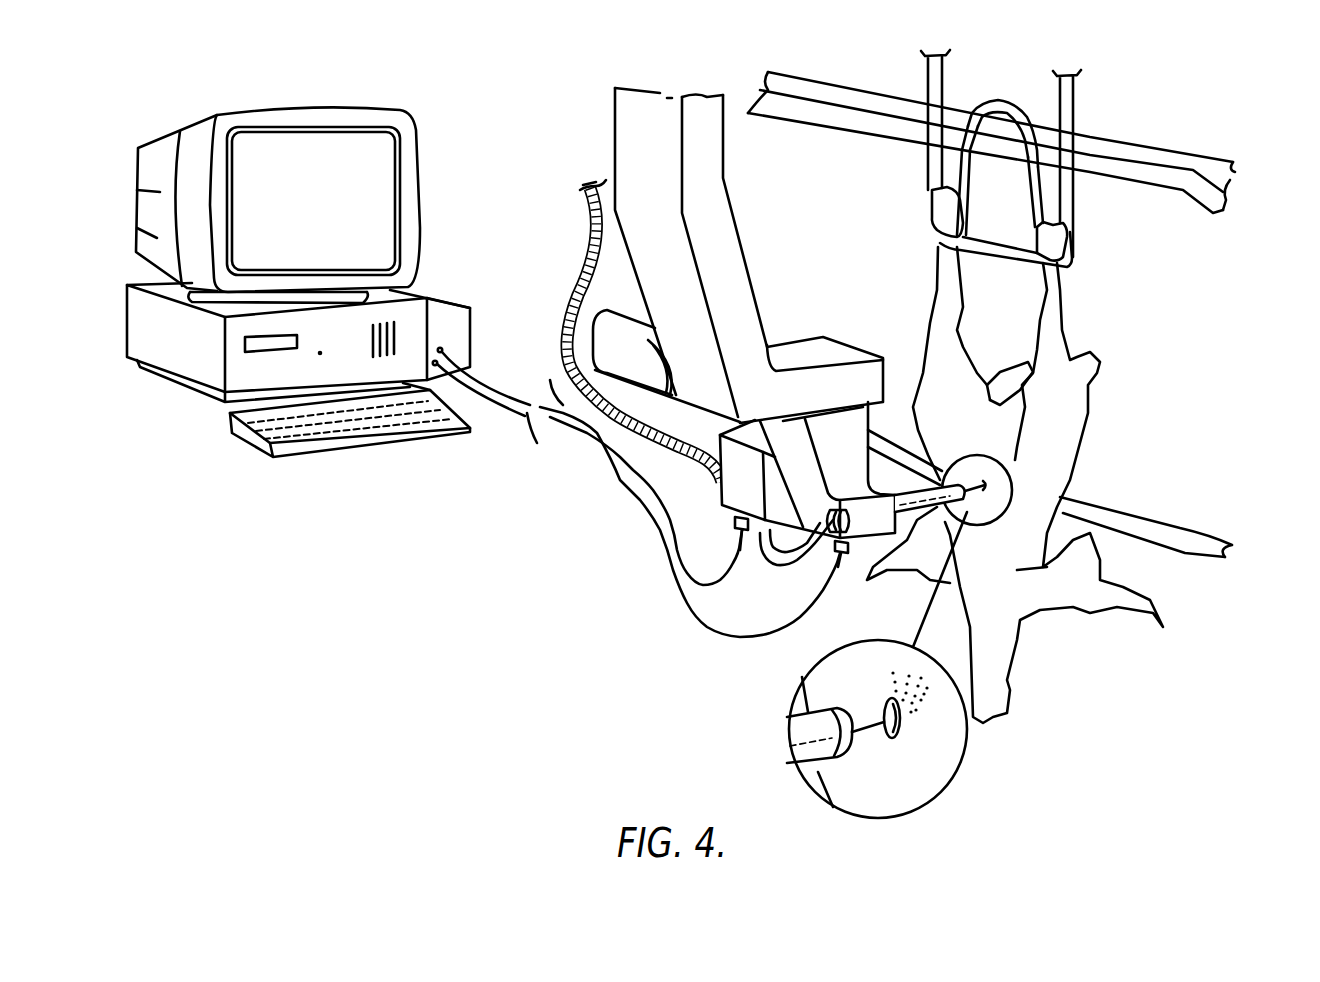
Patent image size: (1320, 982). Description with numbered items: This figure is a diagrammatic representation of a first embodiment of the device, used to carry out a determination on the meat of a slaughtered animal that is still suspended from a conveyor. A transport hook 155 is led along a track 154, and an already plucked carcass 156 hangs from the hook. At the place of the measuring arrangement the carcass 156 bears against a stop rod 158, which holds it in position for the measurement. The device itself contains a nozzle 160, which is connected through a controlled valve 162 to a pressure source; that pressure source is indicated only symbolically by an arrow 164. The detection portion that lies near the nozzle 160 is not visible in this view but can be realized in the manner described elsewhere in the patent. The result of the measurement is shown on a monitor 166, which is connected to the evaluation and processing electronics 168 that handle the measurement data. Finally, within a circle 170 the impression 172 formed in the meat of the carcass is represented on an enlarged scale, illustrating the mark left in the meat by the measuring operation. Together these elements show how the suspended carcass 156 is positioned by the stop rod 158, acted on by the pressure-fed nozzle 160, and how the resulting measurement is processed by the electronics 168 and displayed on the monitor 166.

The track 154 is at (1152, 152).
The transport hook 155 is at (1074, 97).
The carcass 156 is at (1068, 408).
The stop rod 158 is at (1180, 528).
The nozzle 160 is at (940, 480).
The controlled valve 162 is at (747, 492).
The arrow indicating pressure source 164 is at (582, 180).
The monitor 166 is at (382, 185).
The evaluation and processing electronics 168 is at (180, 347).
The circle 170 is at (927, 808).
The impression 172 is at (906, 729).